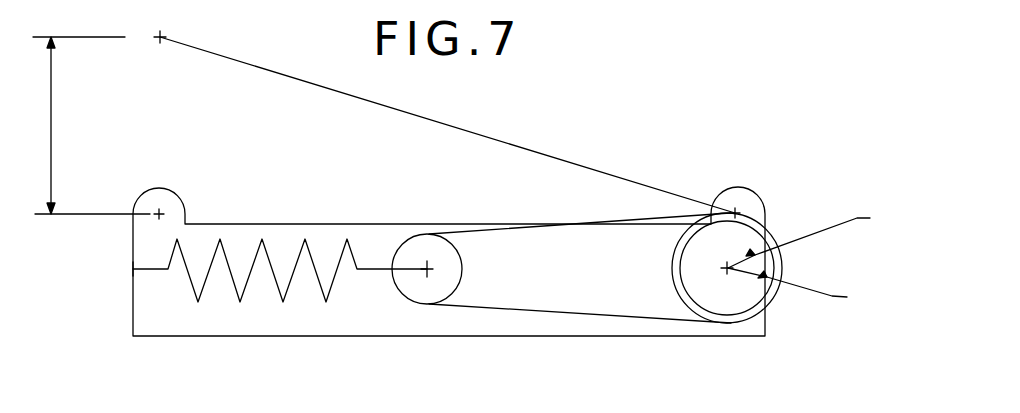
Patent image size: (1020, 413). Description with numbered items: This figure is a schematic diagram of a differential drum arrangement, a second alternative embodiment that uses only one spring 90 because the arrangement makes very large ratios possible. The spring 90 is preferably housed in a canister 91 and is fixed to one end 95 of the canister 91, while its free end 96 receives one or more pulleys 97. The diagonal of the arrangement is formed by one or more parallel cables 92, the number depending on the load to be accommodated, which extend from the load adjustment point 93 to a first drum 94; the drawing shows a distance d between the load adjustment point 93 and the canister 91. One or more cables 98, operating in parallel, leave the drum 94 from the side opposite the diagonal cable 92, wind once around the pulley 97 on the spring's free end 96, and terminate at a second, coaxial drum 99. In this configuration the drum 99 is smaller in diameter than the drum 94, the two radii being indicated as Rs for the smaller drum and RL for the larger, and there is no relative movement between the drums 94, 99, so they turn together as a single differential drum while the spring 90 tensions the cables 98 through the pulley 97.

The spring 90 is at (263, 240).
The canister 91 is at (243, 322).
The parallel cable 92 is at (531, 150).
The load adjustment point 93 is at (160, 41).
The first drum 94 is at (777, 263).
The end of the canister 95 is at (133, 271).
The free end of the spring 96 is at (428, 268).
The pulley 97 is at (463, 278).
The cable 98 is at (580, 228).
The second coaxial drum 99 is at (745, 302).
The distance d is at (91, 125).
The small radius Rs is at (815, 236).
The large radius RL is at (805, 292).